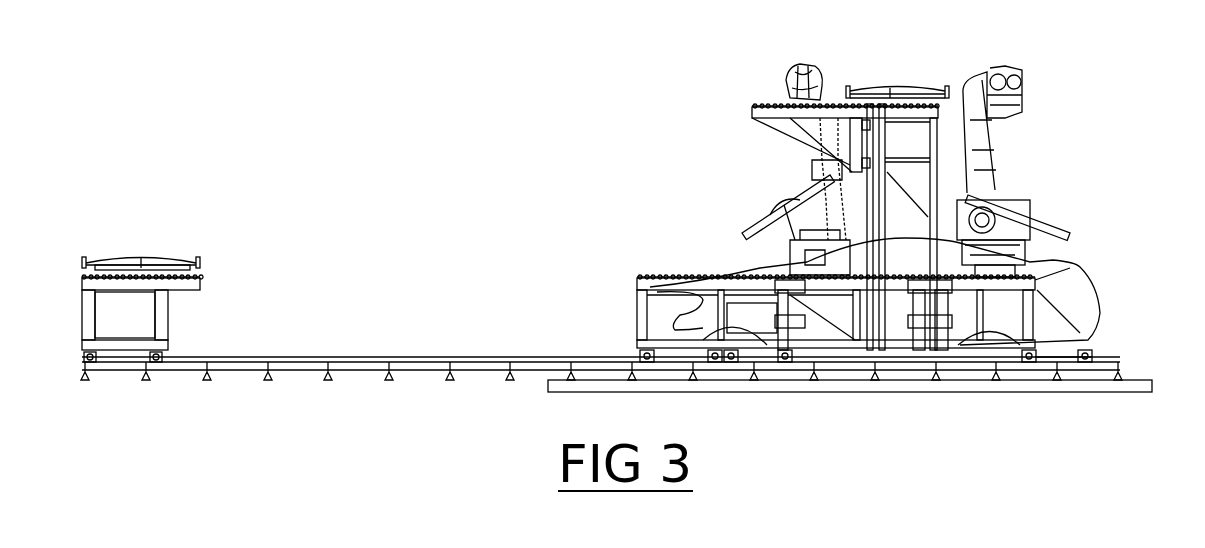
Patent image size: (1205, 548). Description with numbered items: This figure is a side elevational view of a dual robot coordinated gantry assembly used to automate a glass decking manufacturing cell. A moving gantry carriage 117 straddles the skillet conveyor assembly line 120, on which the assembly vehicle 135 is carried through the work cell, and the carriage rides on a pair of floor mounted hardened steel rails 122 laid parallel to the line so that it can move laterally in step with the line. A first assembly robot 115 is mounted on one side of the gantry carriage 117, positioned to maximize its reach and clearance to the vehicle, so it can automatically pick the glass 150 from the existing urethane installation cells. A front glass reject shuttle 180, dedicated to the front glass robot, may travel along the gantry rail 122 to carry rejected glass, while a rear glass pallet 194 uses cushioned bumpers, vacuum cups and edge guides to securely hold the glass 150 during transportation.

The first assembly robot 115 is at (1059, 190).
The gantry carriage 117 is at (740, 181).
The skillet conveyor assembly line 120 is at (832, 341).
The rails 122 is at (601, 310).
The assembly vehicle 135 is at (913, 271).
The glass 150 is at (180, 217).
The front glass reject shuttle 180 is at (587, 280).
The rear glass pallet 194 is at (911, 64).